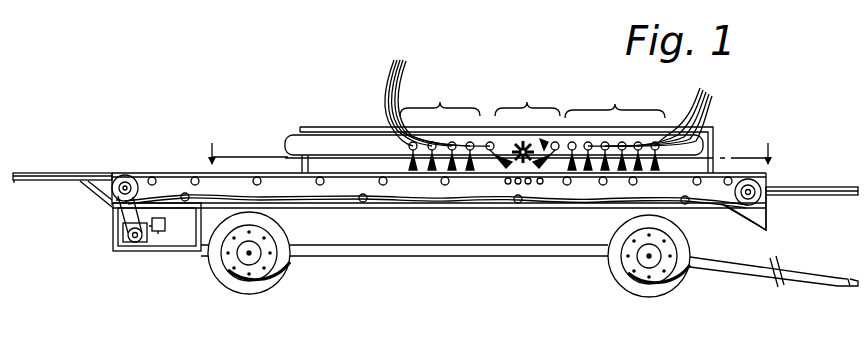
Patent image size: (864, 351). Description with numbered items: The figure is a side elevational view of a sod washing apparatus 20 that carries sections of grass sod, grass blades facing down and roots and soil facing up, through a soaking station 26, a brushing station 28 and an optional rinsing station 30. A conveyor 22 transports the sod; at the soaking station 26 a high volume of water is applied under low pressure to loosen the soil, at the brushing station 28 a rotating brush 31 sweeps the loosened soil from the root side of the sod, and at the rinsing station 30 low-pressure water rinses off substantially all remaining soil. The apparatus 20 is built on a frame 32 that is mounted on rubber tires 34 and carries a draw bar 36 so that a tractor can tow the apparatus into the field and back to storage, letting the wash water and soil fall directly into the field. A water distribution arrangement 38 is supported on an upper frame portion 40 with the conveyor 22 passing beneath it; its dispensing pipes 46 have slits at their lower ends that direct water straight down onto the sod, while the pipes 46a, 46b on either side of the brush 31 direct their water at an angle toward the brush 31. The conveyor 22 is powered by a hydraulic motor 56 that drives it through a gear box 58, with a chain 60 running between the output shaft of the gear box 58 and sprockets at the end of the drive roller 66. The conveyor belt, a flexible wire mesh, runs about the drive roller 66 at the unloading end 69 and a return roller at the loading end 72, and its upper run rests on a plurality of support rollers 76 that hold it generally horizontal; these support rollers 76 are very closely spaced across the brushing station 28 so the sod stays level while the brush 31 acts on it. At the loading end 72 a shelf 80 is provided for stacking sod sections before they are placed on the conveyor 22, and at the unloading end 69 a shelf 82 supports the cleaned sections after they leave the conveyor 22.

The sod washing apparatus 20 is at (180, 64).
The conveyor 22 is at (160, 169).
The soaking station 26 is at (599, 123).
The brushing station 28 is at (527, 119).
The rinsing station 30 is at (456, 122).
The rotating brush 31 is at (555, 146).
The frame 32 is at (719, 127).
The rubber tires 34 is at (262, 280).
The draw bar 36 is at (813, 285).
The water distribution arrangement 38 is at (284, 128).
The upper frame portion 40 is at (314, 130).
The dispensing pipes 46 is at (549, 95).
The dispensing pipe 46a is at (484, 142).
The dispensing pipe 46b is at (563, 146).
The hydraulic motor 56 is at (168, 240).
The gear box 58 is at (141, 246).
The chain 60 is at (112, 227).
The drive roller 66 is at (116, 174).
The unloading end 69 is at (14, 183).
The loading end 72 is at (851, 200).
The support rollers 76 is at (166, 176).
The shelf 80 is at (831, 187).
The shelf 82 is at (69, 176).